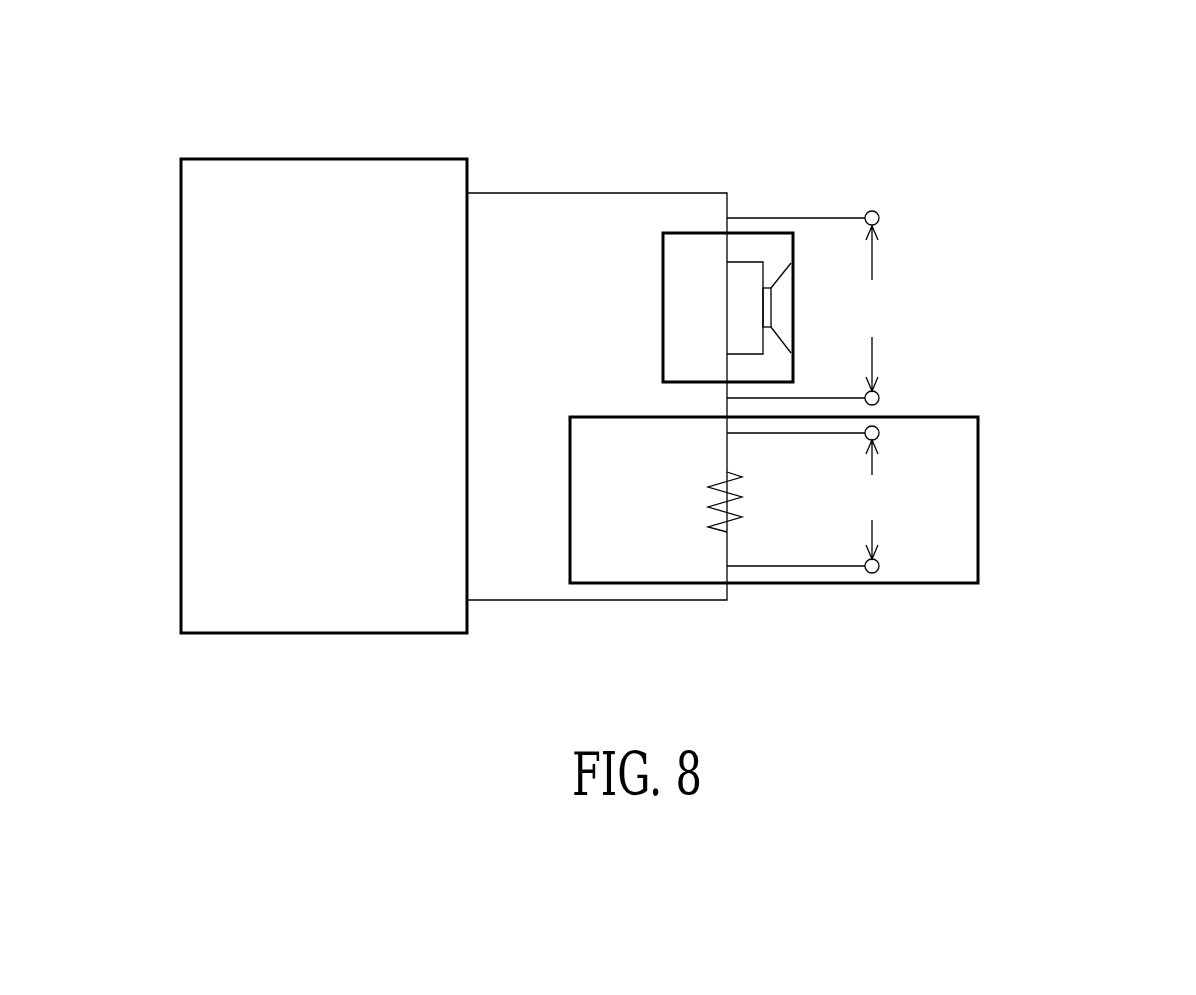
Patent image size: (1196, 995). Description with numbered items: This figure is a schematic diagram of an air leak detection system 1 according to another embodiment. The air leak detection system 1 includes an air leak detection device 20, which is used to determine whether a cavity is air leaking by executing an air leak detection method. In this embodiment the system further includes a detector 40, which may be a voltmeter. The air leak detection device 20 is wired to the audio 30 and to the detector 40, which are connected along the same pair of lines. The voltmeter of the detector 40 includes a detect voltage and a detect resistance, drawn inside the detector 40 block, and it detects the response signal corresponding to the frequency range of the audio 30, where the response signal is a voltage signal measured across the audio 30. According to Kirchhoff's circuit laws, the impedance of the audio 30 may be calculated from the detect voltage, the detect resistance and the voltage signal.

The air leak detection system 1 is at (1058, 80).
The air leak detection device 20 is at (323, 159).
The audio 30 is at (662, 249).
The detector 40 is at (979, 503).